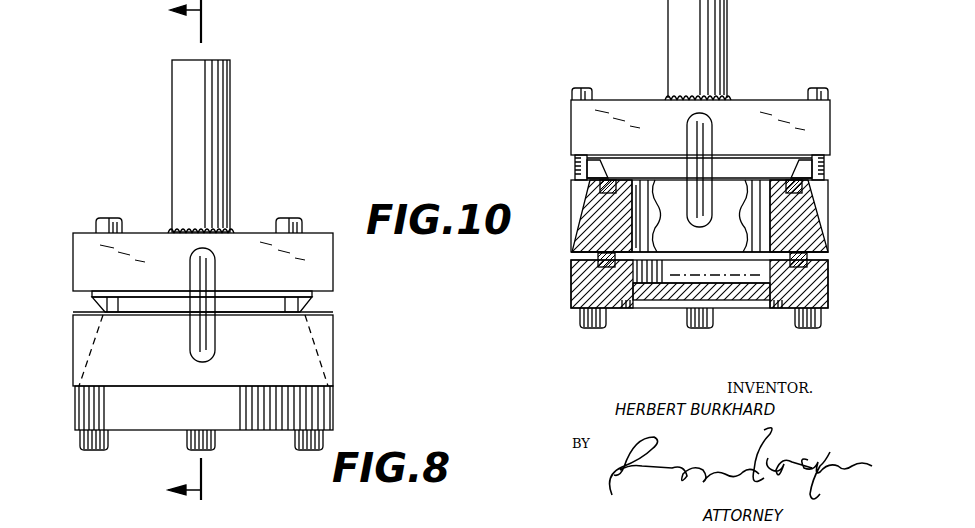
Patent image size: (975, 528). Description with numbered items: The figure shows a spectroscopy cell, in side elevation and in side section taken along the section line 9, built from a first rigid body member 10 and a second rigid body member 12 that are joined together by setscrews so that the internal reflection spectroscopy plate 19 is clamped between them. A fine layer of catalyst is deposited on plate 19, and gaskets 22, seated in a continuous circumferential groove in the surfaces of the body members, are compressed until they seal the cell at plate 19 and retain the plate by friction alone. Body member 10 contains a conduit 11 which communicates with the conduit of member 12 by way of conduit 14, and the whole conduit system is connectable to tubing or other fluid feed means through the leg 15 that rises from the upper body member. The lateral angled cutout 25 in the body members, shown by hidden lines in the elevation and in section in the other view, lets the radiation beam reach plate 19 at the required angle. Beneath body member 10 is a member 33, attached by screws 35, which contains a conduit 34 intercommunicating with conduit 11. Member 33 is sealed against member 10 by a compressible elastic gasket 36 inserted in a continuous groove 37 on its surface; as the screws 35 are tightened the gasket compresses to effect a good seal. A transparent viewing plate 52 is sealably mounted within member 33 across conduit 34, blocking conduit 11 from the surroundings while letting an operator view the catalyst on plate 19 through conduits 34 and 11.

In FIG. 8, the section line 9- 9 is at (184, 250).
In FIG. 8, the first rigid body member 10 is at (336, 368).
In FIG. 10, the first rigid body member 10 is at (828, 243).
In FIG. 10, the conduit 11 is at (640, 237).
In FIG. 8, the second rigid body member 12 is at (73, 260).
In FIG. 10, the second rigid body member 12 is at (700, 77).
In FIG. 8, the conduit 14 is at (207, 276).
In FIG. 10, the conduit 14 is at (705, 137).
In FIG. 8, the leg 15 is at (230, 118).
In FIG. 10, the leg 15 is at (728, 30).
In FIG. 8, the internal reflection spectroscopy plate 19 is at (300, 296).
In FIG. 10, the internal reflection spectroscopy plate 19 is at (812, 170).
In FIG. 8, the gaskets 22 is at (142, 292).
In FIG. 10, the gaskets 22 is at (607, 179).
In FIG. 8, the lateral angled cutout 25 is at (90, 336).
In FIG. 10, the lateral angled cutout 25 is at (592, 216).
In FIG. 8, the member 33 is at (336, 413).
In FIG. 10, the member 33 is at (572, 295).
In FIG. 10, the conduit 34 is at (745, 268).
In FIG. 8, the screws 35 is at (94, 452).
In FIG. 10, the screws 35 is at (590, 330).
In FIG. 10, the compressible elastic gasket 36 is at (598, 264).
In FIG. 10, the groove 37 is at (806, 265).
In FIG. 10, the transparent viewing plate 52 is at (660, 300).